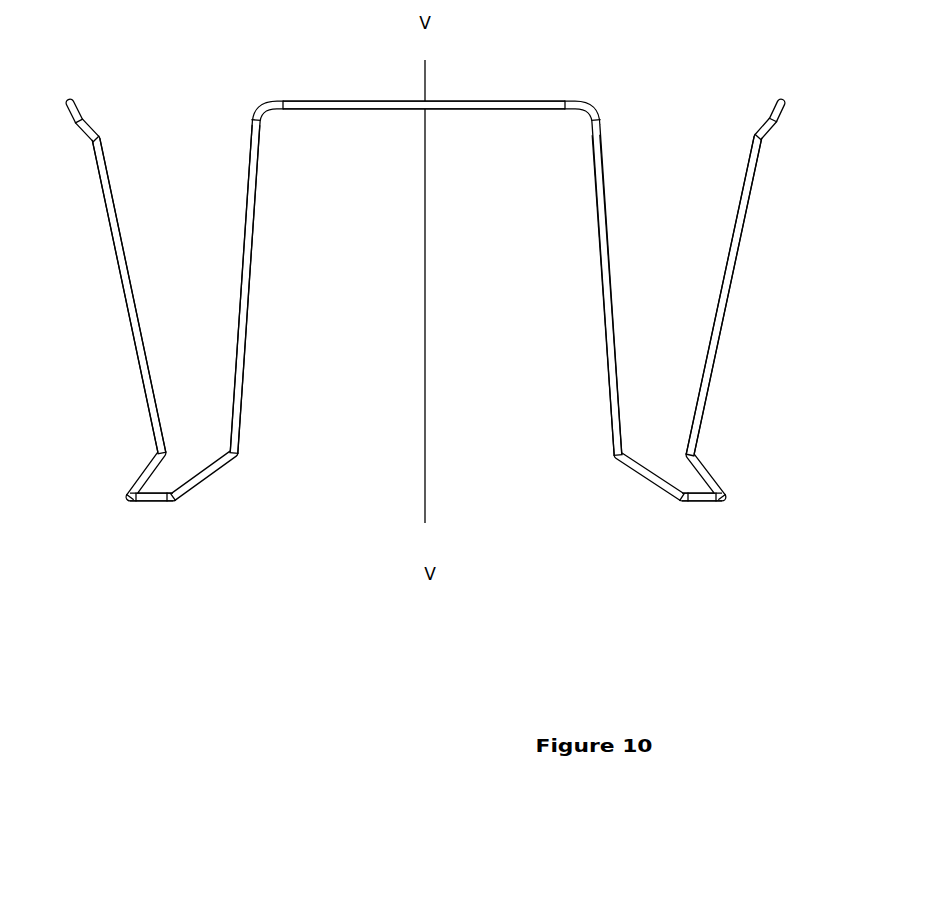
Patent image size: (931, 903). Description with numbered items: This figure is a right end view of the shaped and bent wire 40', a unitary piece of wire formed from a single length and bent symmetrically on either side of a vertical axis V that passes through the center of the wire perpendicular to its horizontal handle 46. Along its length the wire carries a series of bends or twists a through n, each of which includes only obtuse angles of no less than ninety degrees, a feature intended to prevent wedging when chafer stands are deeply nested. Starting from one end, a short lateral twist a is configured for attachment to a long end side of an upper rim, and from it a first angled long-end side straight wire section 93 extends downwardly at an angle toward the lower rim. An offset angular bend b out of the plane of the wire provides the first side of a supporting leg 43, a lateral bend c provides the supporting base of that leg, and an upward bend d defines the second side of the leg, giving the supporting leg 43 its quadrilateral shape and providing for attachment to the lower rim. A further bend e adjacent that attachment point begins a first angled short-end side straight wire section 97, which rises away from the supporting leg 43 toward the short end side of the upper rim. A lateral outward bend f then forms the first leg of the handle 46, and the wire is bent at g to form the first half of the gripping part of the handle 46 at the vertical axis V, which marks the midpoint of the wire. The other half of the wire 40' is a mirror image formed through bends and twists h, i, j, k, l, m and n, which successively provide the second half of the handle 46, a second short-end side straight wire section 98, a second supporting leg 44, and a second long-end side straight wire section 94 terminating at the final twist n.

The shaped and bent wire 40' is at (425, 300).
The handle 46 is at (348, 105).
The first angled long-end side straight wire section 93 is at (125, 292).
The first angled short-end side straight wire section 97 is at (243, 318).
The second short-end side straight wire section 98 is at (607, 322).
The second long-end side straight wire section 94 is at (725, 297).
The supporting leg 43 is at (155, 502).
The second supporting leg 44 is at (702, 500).
The short lateral twist a is at (83, 130).
The offset angular bend b is at (157, 452).
The lateral bend c is at (127, 493).
The upward bend d is at (182, 500).
The further bend e is at (237, 460).
The lateral outward bend f is at (262, 125).
The handle bend g is at (277, 100).
The mirror-image bend h is at (575, 104).
The mirror-image bend i is at (598, 118).
The mirror-image bend j is at (615, 458).
The mirror-image bend k is at (677, 500).
The mirror-image bend l is at (727, 497).
The mirror-image bend m is at (697, 453).
The mirror-image twist n is at (770, 130).